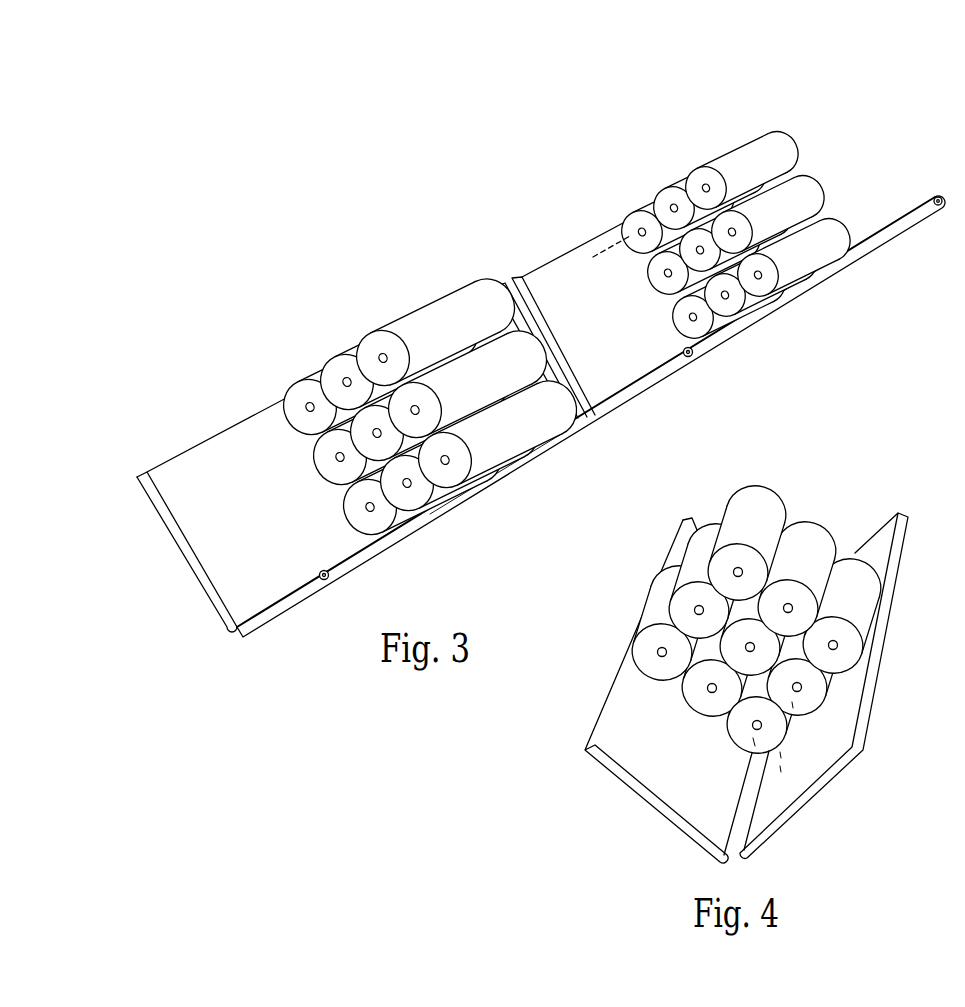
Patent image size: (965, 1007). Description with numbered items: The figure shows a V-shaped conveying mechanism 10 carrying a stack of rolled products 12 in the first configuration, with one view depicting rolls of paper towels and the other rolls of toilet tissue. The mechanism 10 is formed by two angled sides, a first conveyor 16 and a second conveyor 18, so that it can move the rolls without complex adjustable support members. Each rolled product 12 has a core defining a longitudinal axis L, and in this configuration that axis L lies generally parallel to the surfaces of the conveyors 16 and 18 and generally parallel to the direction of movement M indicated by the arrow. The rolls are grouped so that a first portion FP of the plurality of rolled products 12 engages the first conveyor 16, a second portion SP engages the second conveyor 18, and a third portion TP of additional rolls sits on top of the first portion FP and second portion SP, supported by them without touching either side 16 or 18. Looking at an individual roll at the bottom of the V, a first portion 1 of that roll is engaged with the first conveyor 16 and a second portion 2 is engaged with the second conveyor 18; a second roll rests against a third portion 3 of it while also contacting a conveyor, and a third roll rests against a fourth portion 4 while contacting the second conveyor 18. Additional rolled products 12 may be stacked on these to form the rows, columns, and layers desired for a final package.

In FIG. 3, the V-shaped conveying mechanism 10 is at (539, 434).
In FIG. 4, the V-shaped conveying mechanism 10 is at (755, 672).
In FIG. 3, the rolled products 12 is at (430, 315).
In FIG. 4, the rolled products 12 is at (752, 497).
In FIG. 3, the first conveyor 16 is at (186, 574).
In FIG. 4, the first conveyor 16 is at (663, 828).
In FIG. 3, the second conveyor 18 is at (298, 608).
In FIG. 4, the second conveyor 18 is at (866, 764).
In FIG. 3, the third portion TP is at (381, 325).
In FIG. 3, the first portion FP is at (317, 468).
In FIG. 4, the first portion FP is at (964, 556).
In FIG. 3, the second portion SP is at (447, 500).
In FIG. 3, the longitudinal axis L is at (598, 254).
In FIG. 4, the longitudinal axis L is at (745, 765).
In FIG. 3, the direction of movement M is at (853, 176).
In FIG. 4, the first portion of the first rolled product 1 is at (735, 750).
In FIG. 4, the second portion of the first rolled product 2 is at (772, 755).
In FIG. 4, the third portion of the first rolled product 3 is at (740, 712).
In FIG. 4, the fourth portion of the first rolled product 4 is at (773, 714).